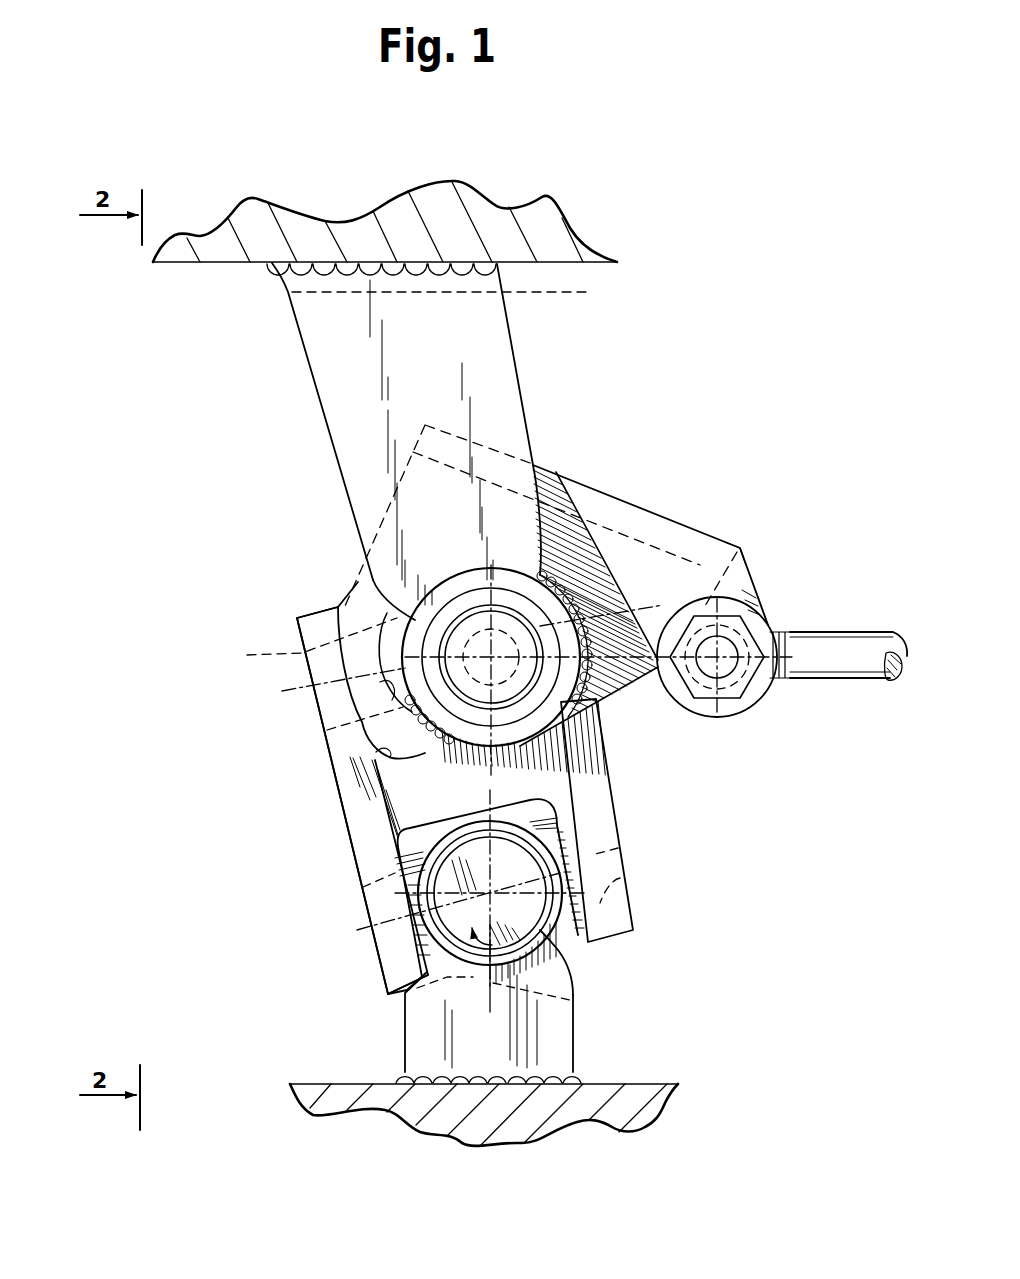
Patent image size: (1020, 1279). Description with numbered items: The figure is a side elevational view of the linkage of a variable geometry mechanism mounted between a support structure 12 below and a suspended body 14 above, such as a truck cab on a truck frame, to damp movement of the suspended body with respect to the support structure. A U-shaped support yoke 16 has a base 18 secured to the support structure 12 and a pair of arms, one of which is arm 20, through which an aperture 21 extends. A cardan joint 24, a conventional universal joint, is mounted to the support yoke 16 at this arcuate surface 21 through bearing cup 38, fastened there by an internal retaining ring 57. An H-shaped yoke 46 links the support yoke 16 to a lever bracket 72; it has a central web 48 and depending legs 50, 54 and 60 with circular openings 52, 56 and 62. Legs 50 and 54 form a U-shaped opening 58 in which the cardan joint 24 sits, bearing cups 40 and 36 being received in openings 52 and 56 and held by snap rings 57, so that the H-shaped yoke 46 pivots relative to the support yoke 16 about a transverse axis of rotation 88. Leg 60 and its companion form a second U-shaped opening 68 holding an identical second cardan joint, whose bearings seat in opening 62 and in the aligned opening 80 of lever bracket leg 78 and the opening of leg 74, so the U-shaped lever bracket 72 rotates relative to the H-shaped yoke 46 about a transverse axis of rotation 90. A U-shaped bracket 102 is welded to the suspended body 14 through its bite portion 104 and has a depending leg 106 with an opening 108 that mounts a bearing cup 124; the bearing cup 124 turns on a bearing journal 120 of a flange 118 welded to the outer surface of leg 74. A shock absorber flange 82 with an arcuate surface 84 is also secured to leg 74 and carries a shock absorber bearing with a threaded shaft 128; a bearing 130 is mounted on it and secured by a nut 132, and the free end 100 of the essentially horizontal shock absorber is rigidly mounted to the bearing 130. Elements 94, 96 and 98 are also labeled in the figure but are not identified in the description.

The support structure 12 is at (660, 1082).
The suspended body 14 is at (595, 241).
The U-shaped support yoke 16 is at (575, 995).
The base 18 is at (392, 1002).
The arm 20 is at (427, 972).
The aperture 21 is at (488, 981).
The cardan joint 24 is at (540, 822).
The bearing cup 36 is at (618, 848).
The bearing cup 38 is at (513, 925).
The bearing cup 40 is at (355, 893).
The H-shaped yoke 46 is at (326, 760).
The central web 48 is at (522, 799).
The leg 50 is at (383, 984).
The circular opening 52 is at (363, 887).
The leg 54 is at (622, 928).
The circular opening 56 is at (620, 878).
The snap ring 57 is at (408, 833).
The U-shaped opening 58 is at (445, 820).
The leg 60 is at (297, 621).
The circular opening 62 is at (305, 643).
The U-shaped opening 68 is at (387, 742).
The lever bracket 72 is at (636, 499).
The leg 74 is at (390, 507).
The leg 78 is at (370, 590).
The opening 80 is at (410, 690).
The shock absorber flange 82 is at (742, 552).
The arcuate surface 84 is at (750, 597).
The transverse axis of rotation 88 is at (358, 930).
The transverse axis of rotation 90 is at (297, 690).
The inner race 94 is at (499, 648).
The threaded bore 96 is at (724, 654).
The hidden arm edge 98 is at (693, 613).
The free end of shock absorber 100 is at (856, 640).
The U-shaped bracket 102 is at (525, 389).
The bite portion 104 is at (468, 294).
The leg 106 is at (443, 345).
The opening 108 is at (456, 610).
The flange 118 is at (563, 707).
The bearing journal 120 is at (560, 605).
The bearing cup 124 is at (491, 655).
The threaded shaft 128 is at (725, 665).
The bearing 130 is at (770, 680).
The nut 132 is at (748, 693).